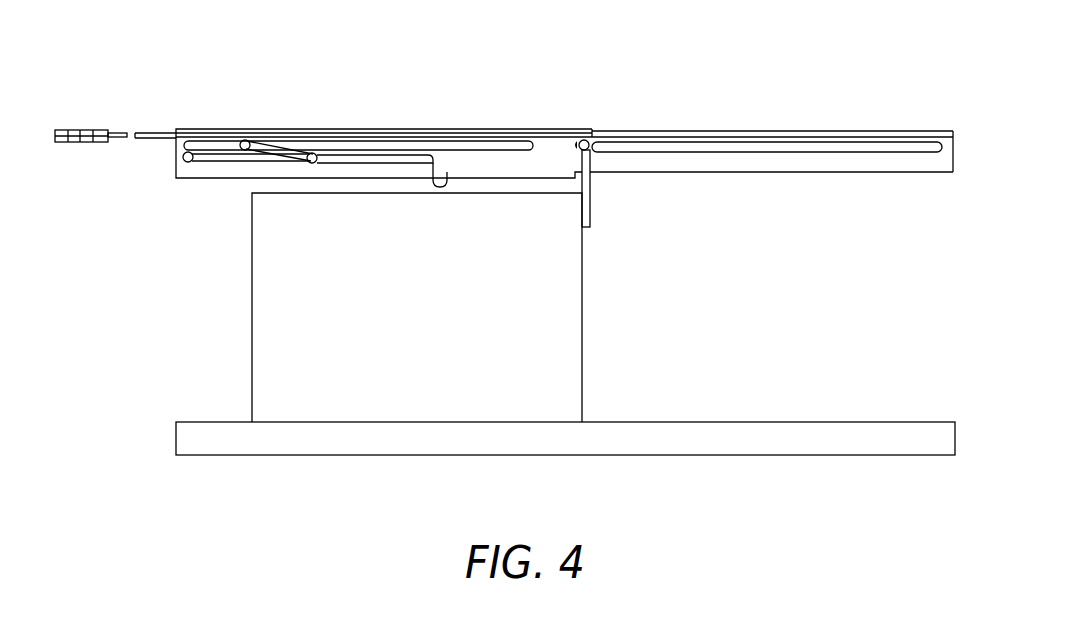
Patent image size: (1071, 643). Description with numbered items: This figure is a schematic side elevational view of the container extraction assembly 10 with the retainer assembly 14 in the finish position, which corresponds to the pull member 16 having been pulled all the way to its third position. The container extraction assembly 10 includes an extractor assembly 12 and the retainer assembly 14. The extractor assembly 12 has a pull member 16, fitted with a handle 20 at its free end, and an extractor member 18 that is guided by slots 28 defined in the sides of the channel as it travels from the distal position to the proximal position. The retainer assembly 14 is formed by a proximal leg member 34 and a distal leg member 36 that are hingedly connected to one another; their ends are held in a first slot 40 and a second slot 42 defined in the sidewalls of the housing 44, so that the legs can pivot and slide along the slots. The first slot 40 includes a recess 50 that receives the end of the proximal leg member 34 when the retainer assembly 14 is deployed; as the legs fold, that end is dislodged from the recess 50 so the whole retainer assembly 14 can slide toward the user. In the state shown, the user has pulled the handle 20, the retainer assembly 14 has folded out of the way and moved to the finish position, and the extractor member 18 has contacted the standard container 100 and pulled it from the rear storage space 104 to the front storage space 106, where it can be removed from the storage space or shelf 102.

The container extraction assembly 10 is at (547, 100).
The extractor assembly 12 is at (767, 120).
The retainer assembly 14 is at (565, 139).
The pull member 16 is at (210, 135).
The extractor member 18 is at (590, 207).
The handle 20 is at (83, 127).
The slots 28 is at (852, 140).
The proximal leg member 34 is at (213, 165).
The distal leg member 36 is at (298, 152).
The first slot 40 is at (200, 163).
The second slot 42 is at (337, 145).
The housing 44 is at (247, 173).
The recess 50 is at (447, 185).
The standard container 100 is at (265, 307).
The storage space or shelf 102 is at (188, 438).
The rear storage space 104 is at (729, 379).
The front storage space 106 is at (377, 381).